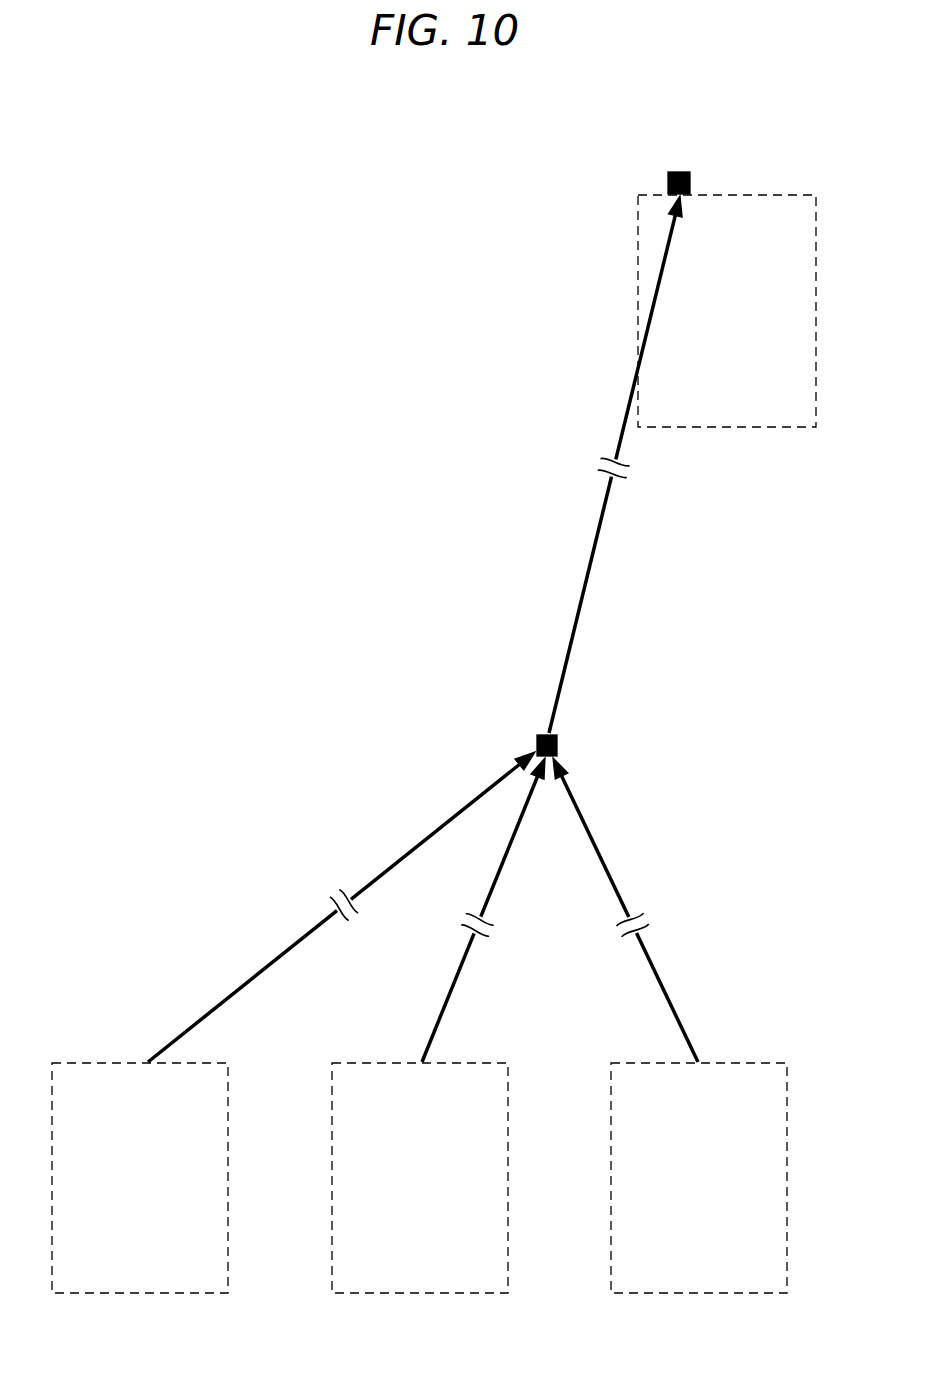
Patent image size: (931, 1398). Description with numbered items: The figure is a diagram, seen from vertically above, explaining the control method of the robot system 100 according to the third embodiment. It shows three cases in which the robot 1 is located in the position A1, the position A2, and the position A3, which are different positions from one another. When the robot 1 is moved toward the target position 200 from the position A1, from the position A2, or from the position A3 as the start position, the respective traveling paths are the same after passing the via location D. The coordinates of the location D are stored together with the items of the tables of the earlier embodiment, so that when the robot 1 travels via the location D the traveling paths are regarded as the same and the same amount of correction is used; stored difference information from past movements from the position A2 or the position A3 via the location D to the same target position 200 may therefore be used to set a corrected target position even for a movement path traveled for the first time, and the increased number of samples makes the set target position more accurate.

The robot system 100 is at (104, 612).
The target position 200 is at (679, 170).
The via location D is at (536, 738).
The robot 1 is at (445, 1227).
The position A1 is at (136, 1294).
The position A2 is at (416, 1294).
The position A3 is at (695, 1294).